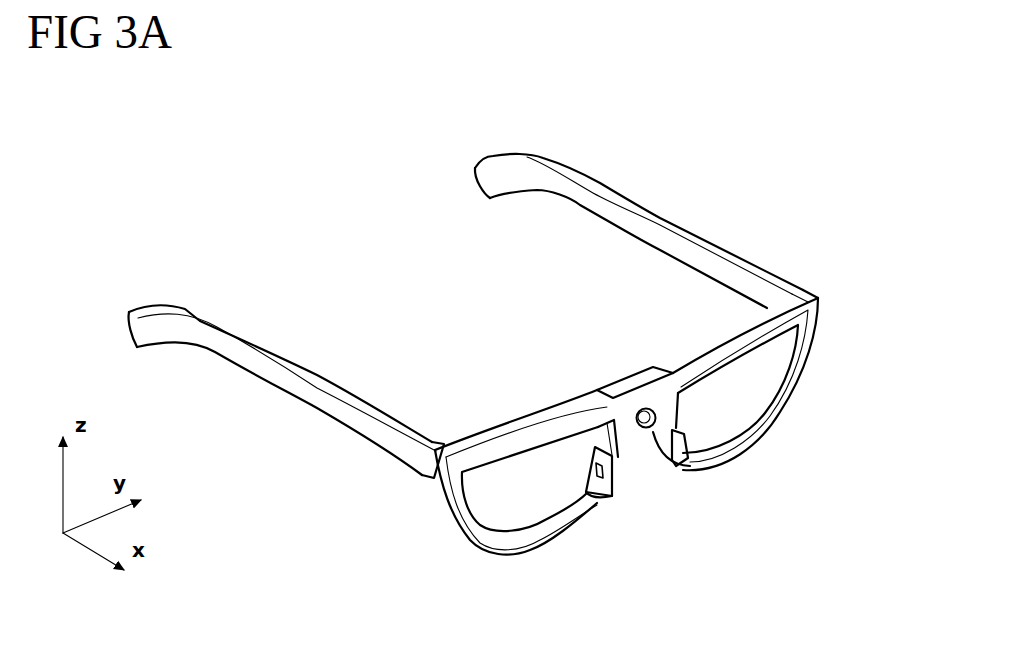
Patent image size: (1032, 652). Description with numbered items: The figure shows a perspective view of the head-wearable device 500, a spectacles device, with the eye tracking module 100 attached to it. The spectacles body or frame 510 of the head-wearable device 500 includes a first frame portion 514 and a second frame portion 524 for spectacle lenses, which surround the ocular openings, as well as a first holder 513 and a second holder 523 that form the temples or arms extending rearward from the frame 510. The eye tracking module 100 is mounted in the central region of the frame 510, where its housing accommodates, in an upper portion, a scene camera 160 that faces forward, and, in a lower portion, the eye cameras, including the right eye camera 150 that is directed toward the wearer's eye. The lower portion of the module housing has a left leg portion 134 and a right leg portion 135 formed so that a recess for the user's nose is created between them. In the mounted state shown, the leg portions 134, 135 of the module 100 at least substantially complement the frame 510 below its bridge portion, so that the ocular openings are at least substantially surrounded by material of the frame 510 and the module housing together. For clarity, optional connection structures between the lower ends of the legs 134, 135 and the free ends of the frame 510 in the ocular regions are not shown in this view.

The head-wearable device 500 is at (724, 132).
The frame 510 is at (647, 155).
The first holder 513 is at (762, 248).
The first frame portion 514 is at (810, 381).
The second holder 523 is at (240, 312).
The second frame portion 524 is at (520, 403).
The eye tracking module 100 is at (627, 363).
The scene camera 160 is at (658, 423).
The right leg portion 135 is at (620, 481).
The right eye camera 150 is at (596, 467).
The left leg portion 134 is at (690, 439).